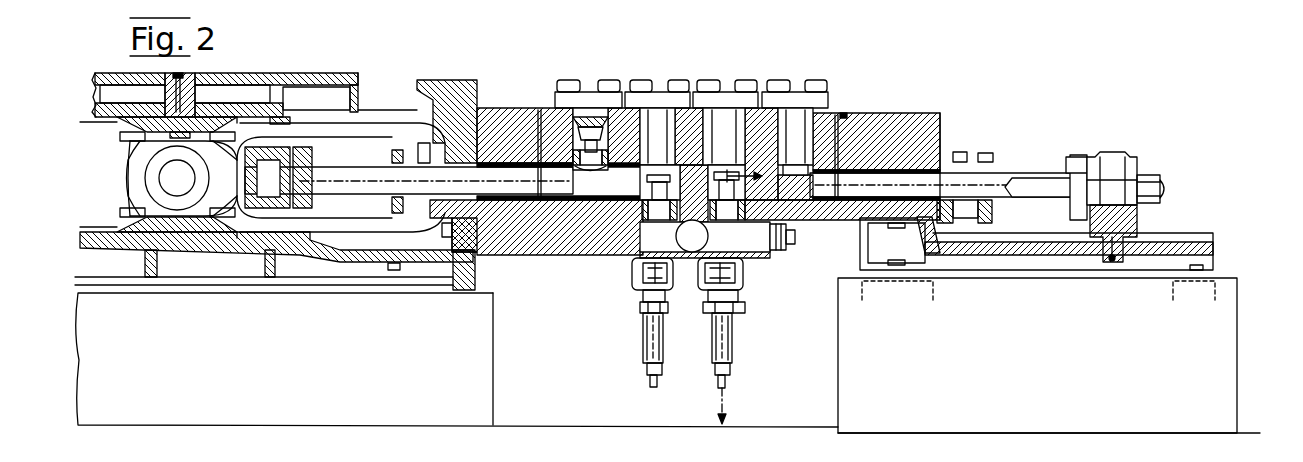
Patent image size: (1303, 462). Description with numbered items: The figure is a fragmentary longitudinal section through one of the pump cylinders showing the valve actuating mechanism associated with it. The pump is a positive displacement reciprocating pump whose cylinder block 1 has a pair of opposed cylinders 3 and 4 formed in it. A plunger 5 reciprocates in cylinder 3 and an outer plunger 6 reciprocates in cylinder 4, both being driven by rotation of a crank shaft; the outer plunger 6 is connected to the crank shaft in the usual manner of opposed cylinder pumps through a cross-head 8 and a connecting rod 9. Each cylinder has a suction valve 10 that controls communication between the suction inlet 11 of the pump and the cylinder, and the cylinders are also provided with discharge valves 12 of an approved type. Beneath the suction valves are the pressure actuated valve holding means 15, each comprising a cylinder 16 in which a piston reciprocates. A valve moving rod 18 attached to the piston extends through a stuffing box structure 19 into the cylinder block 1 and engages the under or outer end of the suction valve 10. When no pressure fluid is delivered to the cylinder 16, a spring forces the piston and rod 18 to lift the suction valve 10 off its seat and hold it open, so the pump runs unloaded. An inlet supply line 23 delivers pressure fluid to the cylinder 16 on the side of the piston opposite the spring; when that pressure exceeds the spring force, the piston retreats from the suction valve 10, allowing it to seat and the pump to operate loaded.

The cylinder block 1 is at (583, 248).
The cylinder 3 is at (625, 207).
The cylinder 4 is at (790, 218).
The plunger 5 is at (368, 175).
The outer plunger 6 is at (976, 176).
The cross-head 8 is at (1108, 166).
The connecting rod 9 is at (1040, 183).
The suction valve 10 is at (648, 194).
The suction inlet 11 is at (692, 238).
The discharge valve 12 is at (583, 118).
The pressure actuated valve holding means 15 is at (666, 340).
The cylinder 16 is at (743, 302).
The valve moving rod 18 is at (643, 276).
The stuffing box structure 19 is at (733, 277).
The inlet supply line 23 is at (640, 304).